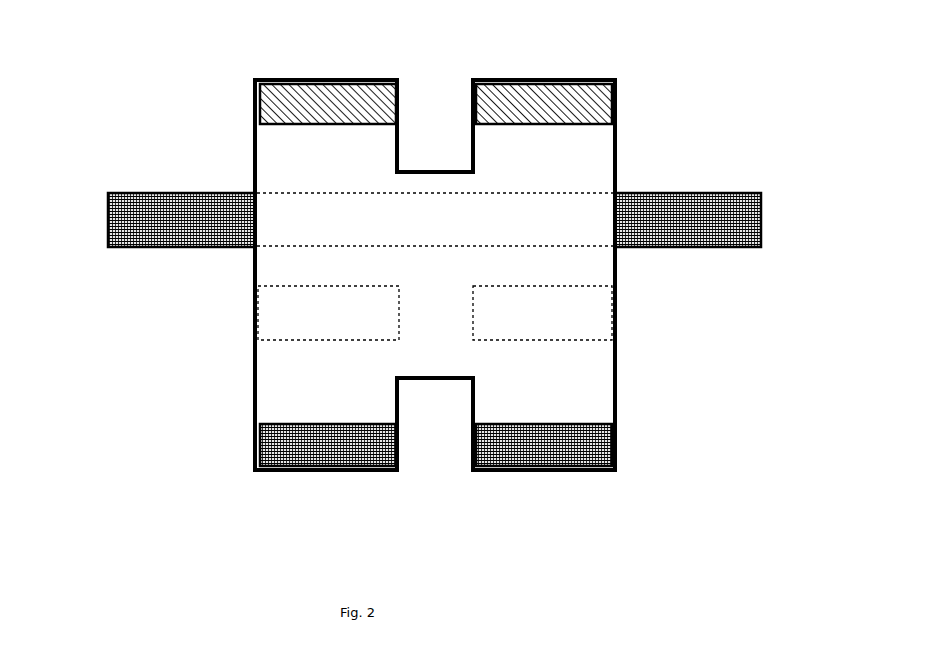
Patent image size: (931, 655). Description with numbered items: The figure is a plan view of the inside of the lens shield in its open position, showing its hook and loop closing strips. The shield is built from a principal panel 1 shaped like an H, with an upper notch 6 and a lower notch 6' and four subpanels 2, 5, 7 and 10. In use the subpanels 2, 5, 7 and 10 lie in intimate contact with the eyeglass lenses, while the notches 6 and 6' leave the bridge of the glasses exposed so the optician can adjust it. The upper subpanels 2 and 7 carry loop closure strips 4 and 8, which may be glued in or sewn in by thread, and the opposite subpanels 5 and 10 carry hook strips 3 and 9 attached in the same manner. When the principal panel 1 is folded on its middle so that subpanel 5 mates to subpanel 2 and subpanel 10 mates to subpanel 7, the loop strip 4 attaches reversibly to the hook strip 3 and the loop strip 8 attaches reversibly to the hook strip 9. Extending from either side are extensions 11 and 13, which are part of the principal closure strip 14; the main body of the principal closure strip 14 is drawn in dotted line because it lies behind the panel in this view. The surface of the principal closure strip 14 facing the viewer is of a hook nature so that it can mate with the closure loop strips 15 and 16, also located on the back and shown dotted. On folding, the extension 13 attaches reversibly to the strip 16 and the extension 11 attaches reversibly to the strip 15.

The principal panel 1 is at (427, 279).
The upper subpanel 2 is at (298, 154).
The hook strip 3 is at (254, 468).
The loop closure strip 4 is at (310, 82).
The subpanel 5 is at (298, 382).
The notch 6 is at (445, 102).
The notch 6' is at (400, 465).
The upper subpanel 7 is at (556, 166).
The loop closure strip 8 is at (555, 80).
The hook strip 9 is at (615, 470).
The subpanel 10 is at (575, 384).
The extension 11 is at (693, 217).
The extension 13 is at (127, 190).
The principal closure strip 14 is at (538, 228).
The closure loop strip 15 is at (583, 313).
The closure loop strip 16 is at (278, 317).